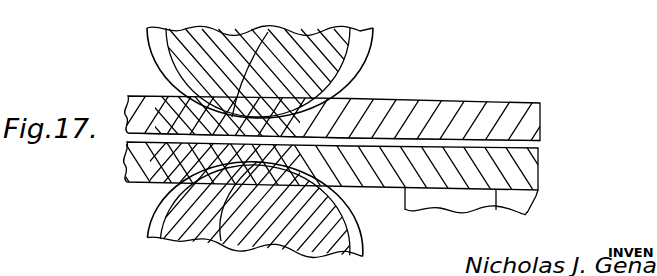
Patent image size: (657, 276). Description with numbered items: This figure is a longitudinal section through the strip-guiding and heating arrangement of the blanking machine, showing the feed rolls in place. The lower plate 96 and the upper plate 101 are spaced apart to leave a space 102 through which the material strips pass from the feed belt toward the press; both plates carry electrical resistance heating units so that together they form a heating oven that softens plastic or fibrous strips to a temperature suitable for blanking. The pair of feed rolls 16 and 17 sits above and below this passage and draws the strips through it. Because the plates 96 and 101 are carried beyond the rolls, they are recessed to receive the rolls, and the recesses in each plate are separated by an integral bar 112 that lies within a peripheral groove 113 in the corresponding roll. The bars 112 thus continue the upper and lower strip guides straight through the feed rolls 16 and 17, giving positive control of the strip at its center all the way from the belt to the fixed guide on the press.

The feed roll 17 is at (326, 47).
The feed roll 16 is at (313, 238).
The peripheral groove 113 is at (363, 62).
The integral bar 112 is at (268, 33).
The plate 101 is at (134, 110).
The space 102 is at (537, 146).
The plate 96 is at (148, 176).